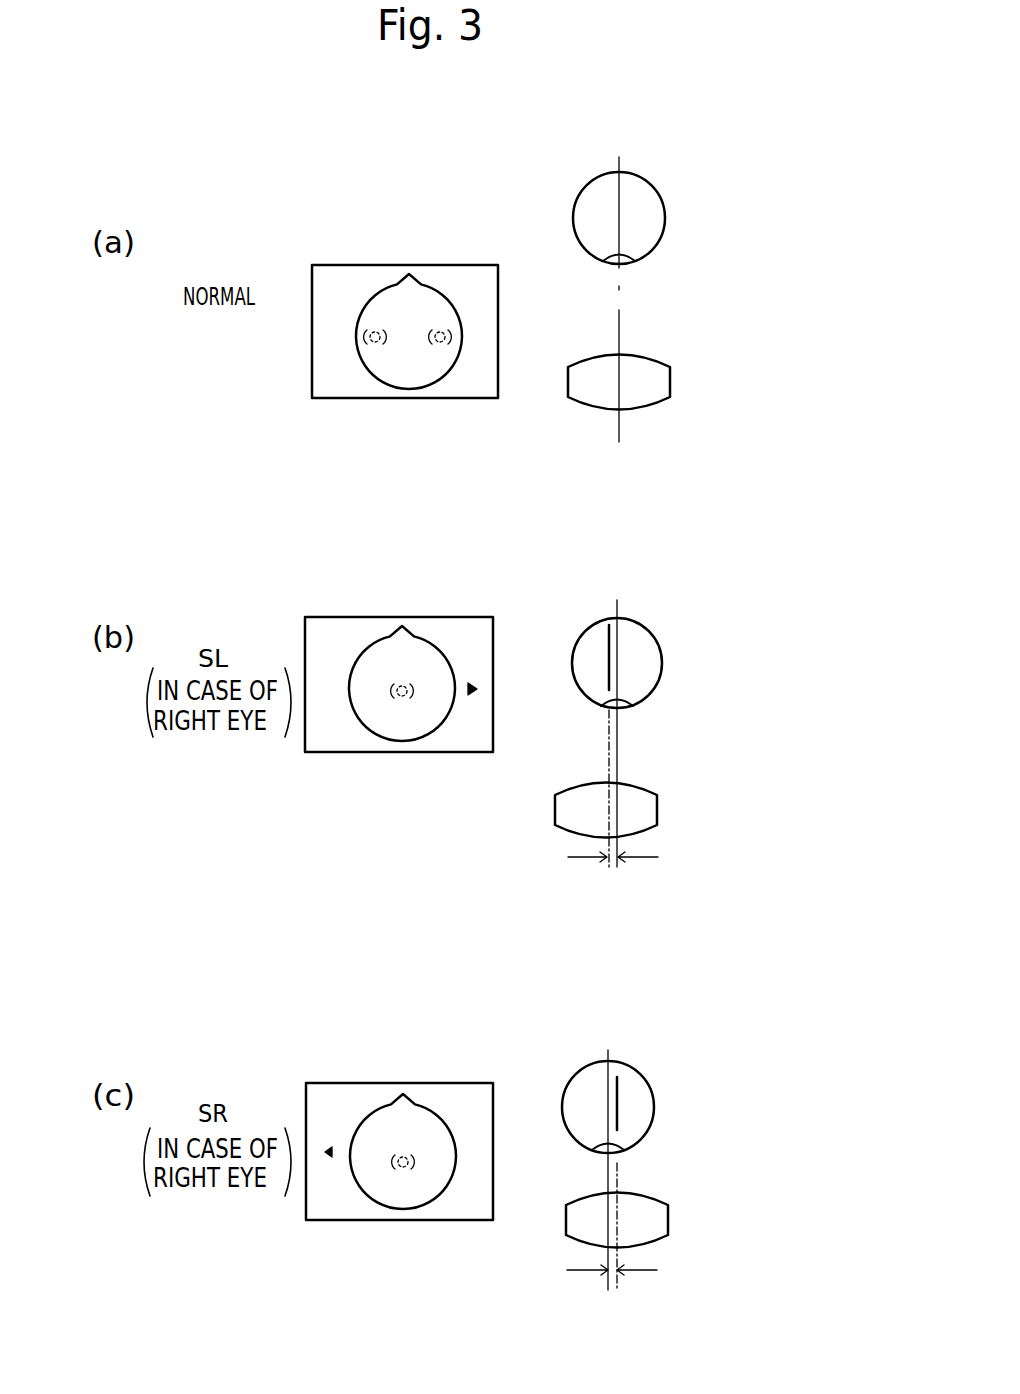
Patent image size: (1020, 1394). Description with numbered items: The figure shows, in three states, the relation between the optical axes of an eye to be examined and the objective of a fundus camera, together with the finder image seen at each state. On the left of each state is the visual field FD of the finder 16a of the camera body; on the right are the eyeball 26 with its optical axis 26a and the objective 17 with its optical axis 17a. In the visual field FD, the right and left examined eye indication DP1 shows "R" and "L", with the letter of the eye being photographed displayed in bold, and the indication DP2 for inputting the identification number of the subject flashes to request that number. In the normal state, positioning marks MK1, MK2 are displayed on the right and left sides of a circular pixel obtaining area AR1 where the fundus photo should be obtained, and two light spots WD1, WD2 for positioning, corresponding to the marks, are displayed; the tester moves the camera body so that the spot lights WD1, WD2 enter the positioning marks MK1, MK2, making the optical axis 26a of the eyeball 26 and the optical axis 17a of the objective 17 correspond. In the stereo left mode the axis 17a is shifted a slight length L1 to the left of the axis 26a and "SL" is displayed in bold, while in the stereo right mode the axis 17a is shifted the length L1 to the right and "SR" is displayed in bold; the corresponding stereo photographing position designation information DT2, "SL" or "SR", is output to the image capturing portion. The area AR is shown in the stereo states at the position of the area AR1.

In FIG. 3a, the finder 16a is at (397, 262).
In FIG. 3b, the finder 16a is at (290, 633).
In FIG. 3c, the finder 16a is at (495, 1100).
In FIG. 3a, the visual field FD is at (491, 296).
In FIG. 3c, the visual field FD is at (491, 1169).
In FIG. 3a, the indication for inputting identification number DP2 is at (352, 265).
In FIG. 3b, the indication for inputting identification number DP2 is at (363, 617).
In FIG. 3c, the indication for inputting identification number DP2 is at (345, 1083).
In FIG. 3a, the right and left examined eye indication DP1 is at (312, 388).
In FIG. 3b, the right and left examined eye indication DP1 is at (322, 752).
In FIG. 3c, the right and left examined eye indication DP1 is at (303, 1210).
In FIG. 3a, the circular pixel obtaining area AR1 is at (423, 287).
In FIG. 3b, the subject face alignment image AR is at (420, 638).
In FIG. 3c, the subject face alignment image AR is at (413, 1100).
In FIG. 3a, the positioning mark MK1 is at (385, 340).
In FIG. 3b, the positioning mark MK1 is at (387, 703).
In FIG. 3a, the positioning mark MK2 is at (433, 328).
In FIG. 3c, the positioning mark MK2 is at (387, 1167).
In FIG. 3a, the light spot for positioning WD1 is at (372, 347).
In FIG. 3b, the light spot for positioning WD1 is at (402, 703).
In FIG. 3a, the light spot for positioning WD2 is at (437, 347).
In FIG. 3c, the light spot for positioning WD2 is at (403, 1175).
In FIG. 3b, the stereo photographing position designation information DT2 is at (458, 652).
In FIG. 3c, the stereo photographing position designation information DT2 is at (456, 1113).
In FIG. 3a, the eyeball 26 is at (665, 230).
In FIG. 3b, the eyeball 26 is at (662, 677).
In FIG. 3c, the eyeball 26 is at (653, 1113).
In FIG. 3a, the optical axis of the eyeball 26a is at (637, 173).
In FIG. 3b, the optical axis of the eyeball 26a is at (620, 648).
In FIG. 3c, the optical axis of the eyeball 26a is at (608, 1050).
In FIG. 3a, the objective 17 is at (670, 378).
In FIG. 3b, the objective 17 is at (658, 807).
In FIG. 3c, the objective 17 is at (668, 1217).
In FIG. 3a, the optical axis of the objective 17a is at (620, 420).
In FIG. 3b, the optical axis of the objective 17a is at (607, 862).
In FIG. 3c, the optical axis of the objective 17a is at (617, 1210).
In FIG. 3b, the slight length L1 is at (627, 859).
In FIG. 3c, the slight length L1 is at (628, 1275).